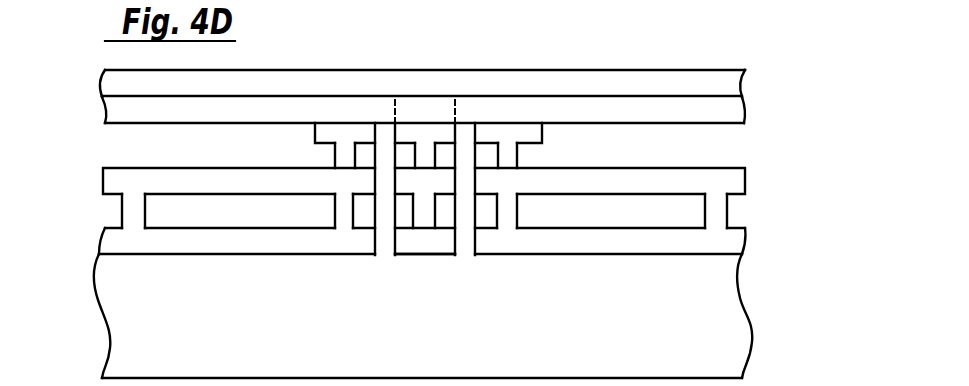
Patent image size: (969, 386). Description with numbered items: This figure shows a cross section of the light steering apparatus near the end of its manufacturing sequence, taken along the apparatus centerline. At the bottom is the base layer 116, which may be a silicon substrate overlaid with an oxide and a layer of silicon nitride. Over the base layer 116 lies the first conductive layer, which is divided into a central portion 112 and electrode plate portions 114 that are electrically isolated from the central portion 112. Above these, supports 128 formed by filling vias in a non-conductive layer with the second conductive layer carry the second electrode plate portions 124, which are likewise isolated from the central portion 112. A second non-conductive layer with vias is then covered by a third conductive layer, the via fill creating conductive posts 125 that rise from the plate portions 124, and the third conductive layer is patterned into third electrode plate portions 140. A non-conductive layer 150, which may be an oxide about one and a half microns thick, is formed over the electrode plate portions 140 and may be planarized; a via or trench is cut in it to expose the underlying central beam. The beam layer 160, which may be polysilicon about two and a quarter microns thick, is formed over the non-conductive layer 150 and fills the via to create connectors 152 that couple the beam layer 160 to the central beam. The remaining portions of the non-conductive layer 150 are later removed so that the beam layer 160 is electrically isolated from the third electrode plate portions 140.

The central portion 112 is at (422, 240).
The electrode plate portions 114 is at (727, 243).
The base layer 116 is at (632, 325).
The second electrode plate portions 124 is at (737, 184).
The conductive posts 125 is at (509, 150).
The supports 128 is at (718, 213).
The third electrode plate portions 140 is at (323, 130).
The non-conductive layer 150 is at (733, 112).
The connectors 152 is at (425, 112).
The beam layer 160 is at (731, 84).